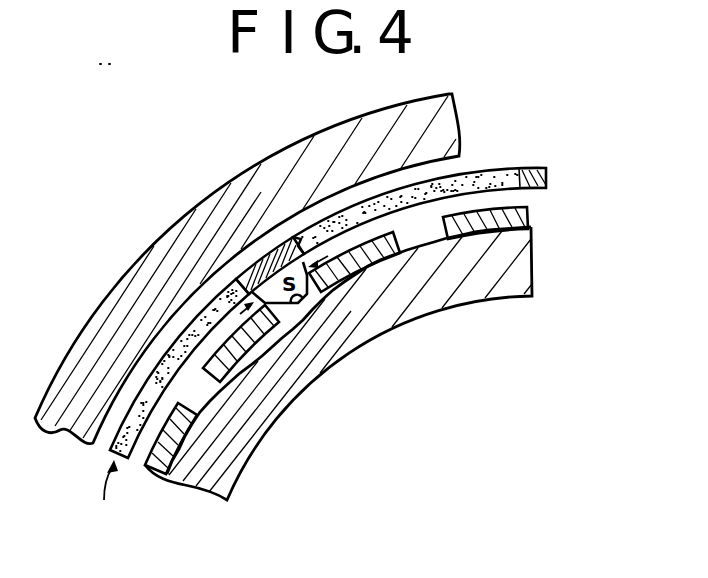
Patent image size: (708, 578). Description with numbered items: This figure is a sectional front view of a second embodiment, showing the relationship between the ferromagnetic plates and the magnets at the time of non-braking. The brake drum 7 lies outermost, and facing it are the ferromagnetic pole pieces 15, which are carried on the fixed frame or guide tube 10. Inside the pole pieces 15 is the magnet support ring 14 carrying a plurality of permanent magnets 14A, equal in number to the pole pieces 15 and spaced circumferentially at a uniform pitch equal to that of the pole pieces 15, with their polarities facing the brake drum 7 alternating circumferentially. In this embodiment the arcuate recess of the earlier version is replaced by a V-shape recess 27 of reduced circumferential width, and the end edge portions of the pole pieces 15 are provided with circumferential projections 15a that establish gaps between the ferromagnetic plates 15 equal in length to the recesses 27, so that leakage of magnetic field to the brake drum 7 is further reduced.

The brake drum 7 is at (72, 370).
The ferromagnetic pole piece 15 is at (187, 337).
The circumferential projection 15a is at (301, 239).
The magnet support ring 14 is at (205, 478).
The permanent magnet 14A is at (205, 373).
The V-shape recess 27 is at (307, 296).
The fixed frame 10 is at (104, 497).